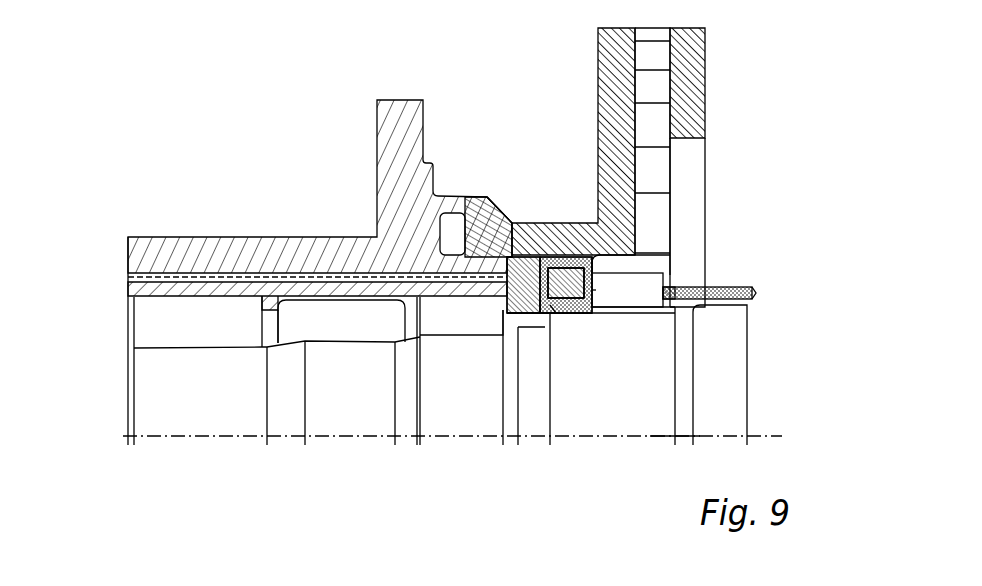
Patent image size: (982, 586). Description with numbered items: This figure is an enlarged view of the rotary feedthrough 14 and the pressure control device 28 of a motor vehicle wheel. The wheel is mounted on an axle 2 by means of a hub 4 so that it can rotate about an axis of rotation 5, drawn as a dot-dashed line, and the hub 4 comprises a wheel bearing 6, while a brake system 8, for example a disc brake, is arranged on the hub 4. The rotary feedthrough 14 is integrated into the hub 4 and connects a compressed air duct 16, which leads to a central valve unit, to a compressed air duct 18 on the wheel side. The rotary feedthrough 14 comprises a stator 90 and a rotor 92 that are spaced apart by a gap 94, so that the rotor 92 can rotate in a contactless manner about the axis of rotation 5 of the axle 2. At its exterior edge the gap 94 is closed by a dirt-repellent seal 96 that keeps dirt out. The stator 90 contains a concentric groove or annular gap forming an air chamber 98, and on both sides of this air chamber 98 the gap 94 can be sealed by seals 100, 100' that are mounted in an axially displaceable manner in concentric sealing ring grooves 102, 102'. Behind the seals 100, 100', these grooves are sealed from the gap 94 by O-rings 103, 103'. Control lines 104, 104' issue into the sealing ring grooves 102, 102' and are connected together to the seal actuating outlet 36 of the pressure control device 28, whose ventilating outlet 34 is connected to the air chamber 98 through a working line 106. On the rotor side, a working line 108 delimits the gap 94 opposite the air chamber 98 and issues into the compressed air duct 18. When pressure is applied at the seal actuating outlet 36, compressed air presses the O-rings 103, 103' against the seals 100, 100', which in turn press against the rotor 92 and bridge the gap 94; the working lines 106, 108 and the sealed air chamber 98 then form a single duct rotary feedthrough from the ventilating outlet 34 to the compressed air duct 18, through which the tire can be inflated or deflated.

The axle 2 is at (652, 426).
The hub 4 is at (490, 86).
The axis of rotation 5 is at (700, 433).
The wheel bearing 6 is at (127, 327).
The brake system 8 is at (722, 83).
The rotary feedthrough 14 is at (501, 301).
The compressed air duct 16 is at (742, 287).
The compressed air duct 18 is at (341, 296).
The pressure control device 28 is at (667, 308).
The ventilating outlet 34 is at (599, 287).
The seal actuating outlet 36 is at (612, 306).
The stator 90 is at (560, 312).
The rotor 92 is at (503, 311).
The gap 94 is at (536, 318).
The dirt-repellent seal 96 is at (597, 262).
The air chamber 98 is at (540, 313).
The seal 100 is at (559, 386).
The sealing ring groove 102 is at (589, 364).
The O-ring 103 is at (589, 388).
The control line 104 is at (586, 324).
The seal 100' is at (517, 249).
The sealing ring groove 102' is at (560, 189).
The O-ring 103' is at (533, 228).
The control line 104' is at (580, 242).
The working line 106 is at (603, 284).
The working line 108 is at (503, 256).